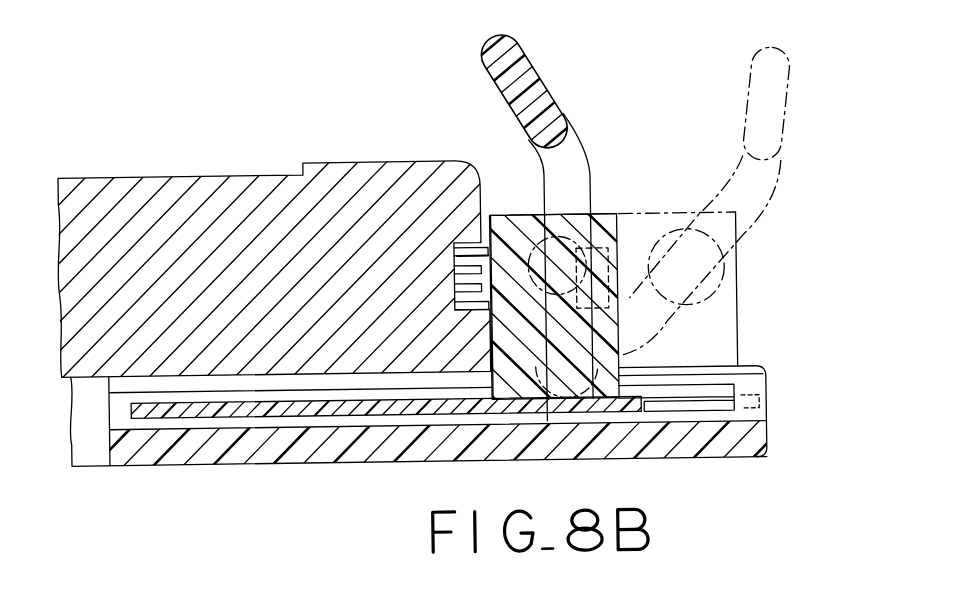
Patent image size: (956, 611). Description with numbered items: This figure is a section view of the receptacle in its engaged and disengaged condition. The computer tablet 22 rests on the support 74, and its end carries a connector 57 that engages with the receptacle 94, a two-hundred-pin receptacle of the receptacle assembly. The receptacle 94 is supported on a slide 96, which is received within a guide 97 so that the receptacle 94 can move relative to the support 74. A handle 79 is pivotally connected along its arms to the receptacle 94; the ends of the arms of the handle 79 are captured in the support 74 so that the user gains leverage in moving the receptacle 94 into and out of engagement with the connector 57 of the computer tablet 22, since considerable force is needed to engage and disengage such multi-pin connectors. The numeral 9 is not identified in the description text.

The computer tablet 22 is at (330, 161).
The connector 57 is at (464, 264).
The handle 79 is at (535, 63).
The receptacle 94 is at (604, 216).
The lever (phantom) 9 is at (706, 206).
The support 74 is at (764, 453).
The slide 96 is at (165, 412).
The guide 97 is at (130, 424).